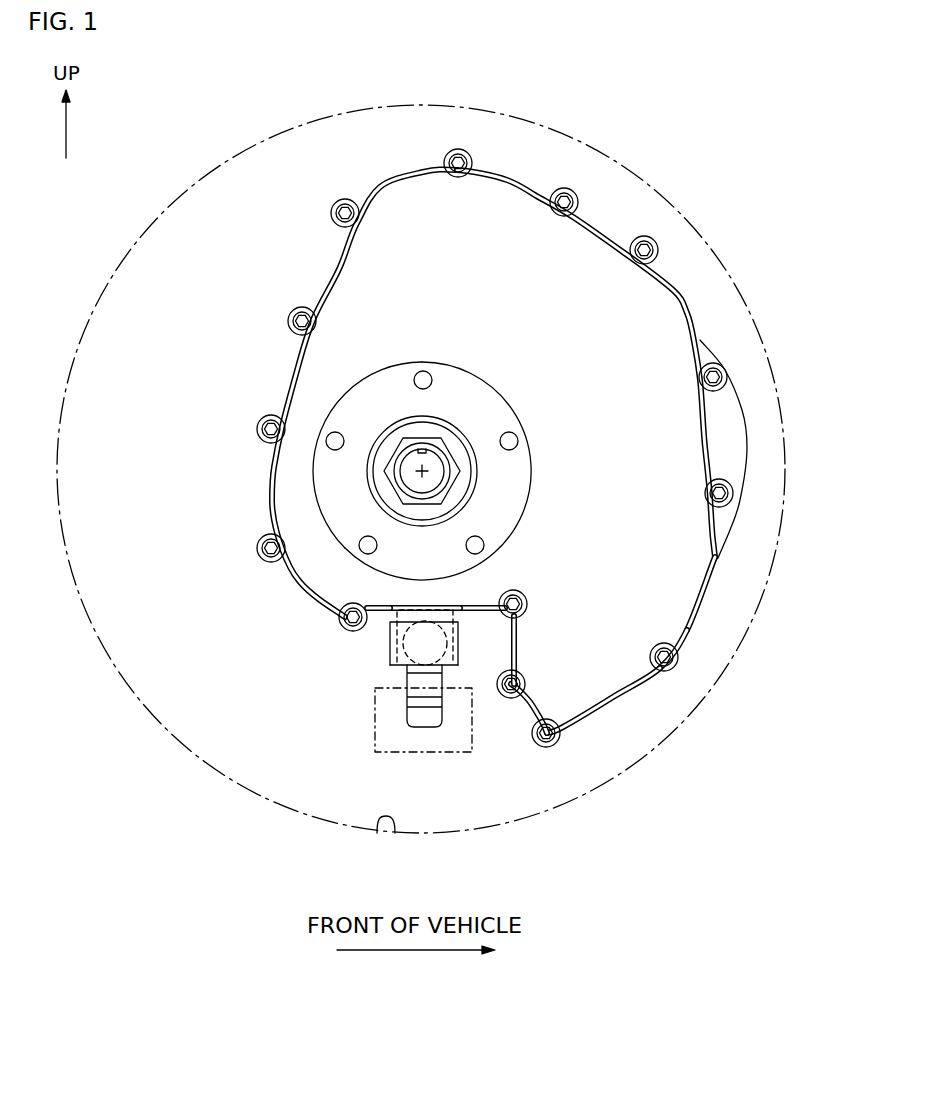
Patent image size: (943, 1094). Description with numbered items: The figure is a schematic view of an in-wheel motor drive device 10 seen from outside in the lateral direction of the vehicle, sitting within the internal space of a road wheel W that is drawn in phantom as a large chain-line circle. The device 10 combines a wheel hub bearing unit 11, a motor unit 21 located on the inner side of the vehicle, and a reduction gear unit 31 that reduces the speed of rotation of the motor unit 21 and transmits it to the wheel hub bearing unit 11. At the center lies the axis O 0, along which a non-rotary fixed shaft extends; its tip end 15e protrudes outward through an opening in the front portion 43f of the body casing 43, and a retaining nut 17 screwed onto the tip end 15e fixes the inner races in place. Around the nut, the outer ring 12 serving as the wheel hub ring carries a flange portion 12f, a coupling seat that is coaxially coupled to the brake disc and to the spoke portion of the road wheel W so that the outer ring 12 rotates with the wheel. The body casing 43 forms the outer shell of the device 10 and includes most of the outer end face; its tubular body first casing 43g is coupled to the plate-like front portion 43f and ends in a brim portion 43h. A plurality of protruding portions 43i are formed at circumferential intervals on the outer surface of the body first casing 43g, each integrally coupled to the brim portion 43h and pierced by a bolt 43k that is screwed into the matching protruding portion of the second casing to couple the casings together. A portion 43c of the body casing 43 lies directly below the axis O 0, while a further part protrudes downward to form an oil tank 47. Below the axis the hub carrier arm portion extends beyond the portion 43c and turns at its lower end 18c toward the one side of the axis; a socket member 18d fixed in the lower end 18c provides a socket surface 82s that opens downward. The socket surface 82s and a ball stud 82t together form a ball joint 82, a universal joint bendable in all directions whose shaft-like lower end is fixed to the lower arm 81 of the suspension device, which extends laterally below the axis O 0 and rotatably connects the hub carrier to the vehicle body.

The in-wheel motor drive device 10 is at (381, 175).
The reduction gear unit 31 is at (351, 272).
The body casing 43 is at (667, 312).
The front portion 43f is at (657, 602).
The body first casing 43g is at (680, 628).
The brim portion 43h is at (597, 712).
The portion located directly below the axis O 43c is at (480, 618).
The bolt 43k is at (350, 623).
The protruding portions 43i is at (260, 553).
The oil tank 47 is at (580, 678).
The motor unit 21 is at (737, 440).
The wheel hub bearing unit 11 is at (330, 398).
The flange portion 12f is at (350, 530).
The outer ring 12 is at (370, 503).
The retaining nut 17 is at (382, 473).
The tip end 15e is at (410, 482).
The axis O 0 is at (423, 470).
The ball joint 82 is at (368, 687).
The socket surface 82s is at (397, 648).
The ball stud 82t is at (413, 715).
The lower arm 81 is at (375, 743).
The socket member 18d is at (397, 620).
The lower end 18c is at (397, 663).
The road wheel W is at (393, 838).